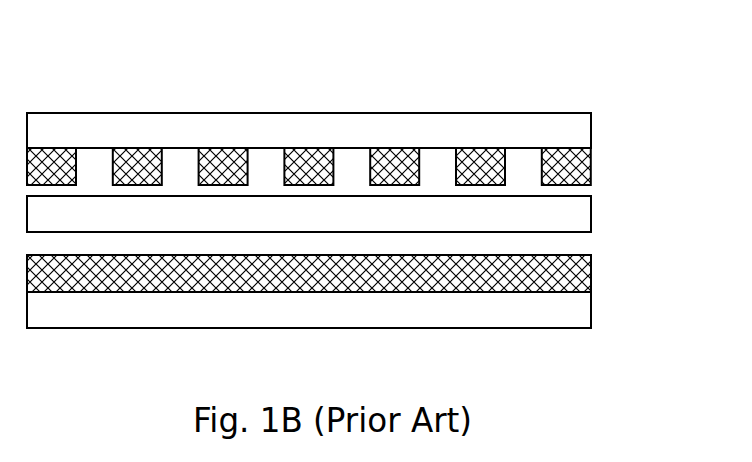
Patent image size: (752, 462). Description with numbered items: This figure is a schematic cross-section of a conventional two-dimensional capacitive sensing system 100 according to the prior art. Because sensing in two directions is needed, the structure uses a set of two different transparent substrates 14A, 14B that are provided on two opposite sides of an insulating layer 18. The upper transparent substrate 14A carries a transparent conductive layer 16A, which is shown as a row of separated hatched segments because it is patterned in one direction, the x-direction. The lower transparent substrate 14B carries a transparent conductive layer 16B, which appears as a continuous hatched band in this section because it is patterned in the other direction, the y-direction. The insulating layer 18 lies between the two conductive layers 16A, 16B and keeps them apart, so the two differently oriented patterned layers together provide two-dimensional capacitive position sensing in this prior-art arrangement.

The two-dimensional capacitive sensing system 100 is at (357, 75).
The transparent substrate 14A is at (578, 135).
The transparent conductive layer 16A is at (588, 162).
The insulating layer 18 is at (578, 218).
The transparent conductive layer 16B is at (578, 270).
The transparent substrate 14B is at (578, 315).